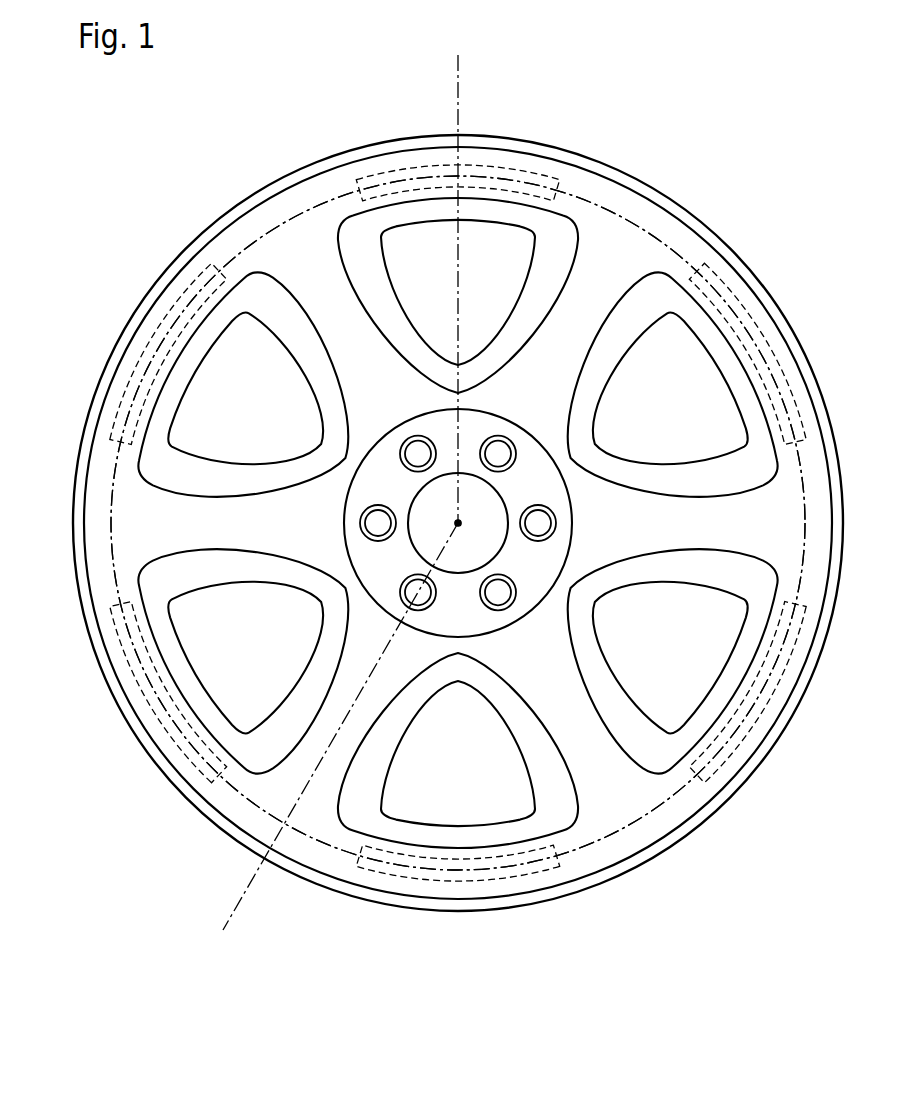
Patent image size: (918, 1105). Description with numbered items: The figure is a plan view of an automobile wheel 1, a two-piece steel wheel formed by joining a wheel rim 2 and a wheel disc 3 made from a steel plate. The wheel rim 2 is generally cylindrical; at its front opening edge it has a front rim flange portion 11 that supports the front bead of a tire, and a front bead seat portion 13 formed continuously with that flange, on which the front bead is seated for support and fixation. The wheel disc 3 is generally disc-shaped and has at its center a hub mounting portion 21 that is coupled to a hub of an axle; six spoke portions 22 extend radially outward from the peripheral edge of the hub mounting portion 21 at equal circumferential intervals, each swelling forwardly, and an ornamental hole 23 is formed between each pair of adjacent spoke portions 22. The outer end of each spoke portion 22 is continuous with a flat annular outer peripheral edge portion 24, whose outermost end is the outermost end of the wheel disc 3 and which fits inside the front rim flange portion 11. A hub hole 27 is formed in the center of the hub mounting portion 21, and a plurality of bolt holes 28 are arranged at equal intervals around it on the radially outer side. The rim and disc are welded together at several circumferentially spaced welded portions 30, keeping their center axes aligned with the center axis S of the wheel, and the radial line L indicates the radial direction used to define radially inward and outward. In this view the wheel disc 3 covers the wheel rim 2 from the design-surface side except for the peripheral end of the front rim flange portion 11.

The automobile wheel 1 is at (718, 108).
The wheel rim 2 is at (785, 320).
The wheel disc 3 is at (640, 263).
The front rim flange portion 11 is at (748, 277).
The front bead seat portion 13 is at (108, 487).
The hub mounting portion 21 is at (530, 563).
The spoke portion 22 is at (607, 265).
The ornamental hole 23 is at (447, 265).
The outer peripheral edge portion 24 is at (808, 470).
The hub hole 27 is at (485, 535).
The bolt hole 28 is at (540, 521).
The welded portion 30 is at (355, 180).
The radial line L is at (455, 72).
The center axis S is at (458, 523).